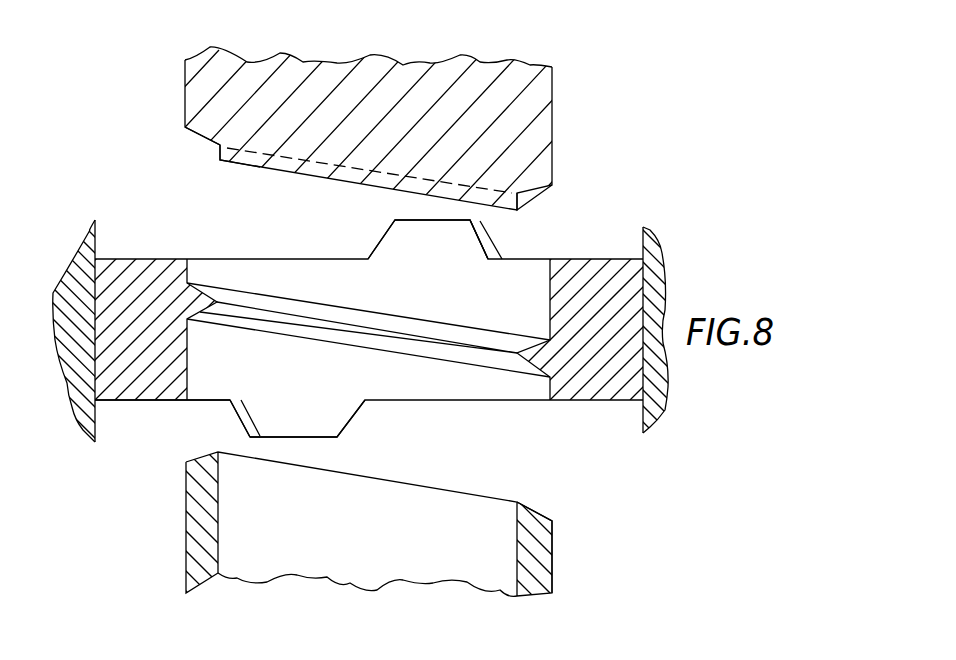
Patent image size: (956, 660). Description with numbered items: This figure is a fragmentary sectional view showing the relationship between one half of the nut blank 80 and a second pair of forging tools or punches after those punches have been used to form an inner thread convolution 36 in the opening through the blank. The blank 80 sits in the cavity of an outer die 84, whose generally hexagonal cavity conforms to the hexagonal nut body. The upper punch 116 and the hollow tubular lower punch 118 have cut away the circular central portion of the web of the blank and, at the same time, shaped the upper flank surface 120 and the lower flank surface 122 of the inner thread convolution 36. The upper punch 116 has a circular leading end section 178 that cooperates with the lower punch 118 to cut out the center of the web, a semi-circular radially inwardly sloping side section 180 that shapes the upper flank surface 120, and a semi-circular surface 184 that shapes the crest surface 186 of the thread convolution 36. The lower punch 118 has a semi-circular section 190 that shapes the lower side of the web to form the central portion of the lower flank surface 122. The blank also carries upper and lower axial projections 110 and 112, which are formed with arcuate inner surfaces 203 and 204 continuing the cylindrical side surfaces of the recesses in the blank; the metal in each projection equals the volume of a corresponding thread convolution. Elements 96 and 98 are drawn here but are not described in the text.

The inner thread convolution 36 is at (486, 320).
The blank 80 is at (124, 242).
The outer die 84 is at (650, 283).
The clamping block 96 is at (170, 258).
The bottom surface 98 is at (128, 402).
The upper axial projection 110 is at (376, 234).
The lower axial projection 112 is at (243, 421).
The upper punch 116 is at (540, 103).
The lower punch 118 is at (538, 557).
The upper flank surface 120 is at (330, 313).
The lower flank surface 122 is at (307, 330).
The leading end section 178 is at (522, 200).
The radially inwardly sloping side section 180 is at (197, 133).
The semi-circular surface 184 is at (220, 160).
The crest surface 186 is at (368, 332).
The semi-circular section 190 is at (533, 507).
The arcuate inner surface 203 is at (482, 245).
The arcuate inner surface 204 is at (343, 420).